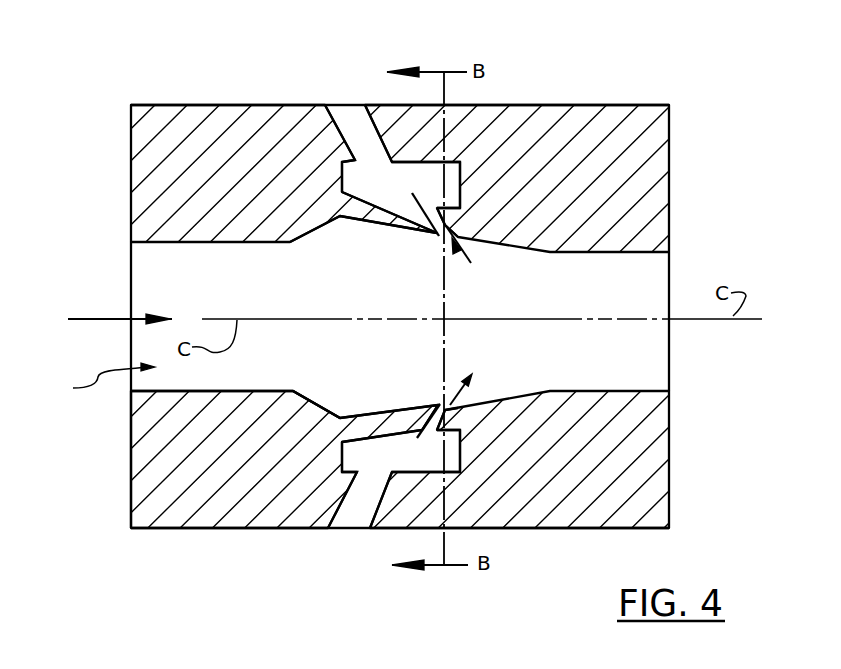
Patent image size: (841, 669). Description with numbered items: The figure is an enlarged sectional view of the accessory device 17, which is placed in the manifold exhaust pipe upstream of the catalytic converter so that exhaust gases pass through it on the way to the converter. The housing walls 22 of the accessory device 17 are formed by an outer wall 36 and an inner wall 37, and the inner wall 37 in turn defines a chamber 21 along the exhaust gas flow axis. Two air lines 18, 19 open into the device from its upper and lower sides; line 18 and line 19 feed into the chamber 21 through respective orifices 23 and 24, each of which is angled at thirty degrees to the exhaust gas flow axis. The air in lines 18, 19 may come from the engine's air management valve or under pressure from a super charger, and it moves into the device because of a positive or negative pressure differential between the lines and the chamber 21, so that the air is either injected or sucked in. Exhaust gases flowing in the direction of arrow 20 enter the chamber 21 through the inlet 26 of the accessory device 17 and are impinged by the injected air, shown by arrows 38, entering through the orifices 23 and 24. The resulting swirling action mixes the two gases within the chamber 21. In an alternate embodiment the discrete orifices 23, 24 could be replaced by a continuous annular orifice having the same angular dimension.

The accessory device 17 is at (688, 212).
The air line 18 is at (345, 112).
The air line 19 is at (353, 513).
The exhaust gas flow arrow 20 is at (108, 312).
The chamber 21 is at (347, 361).
The housing walls 22 is at (213, 513).
The orifice 23 is at (427, 240).
The orifice 24 is at (430, 401).
The inlet 26 is at (95, 381).
The outer wall 36 is at (198, 105).
The inner wall 37 is at (237, 243).
The injected air arrows 38 is at (458, 254).